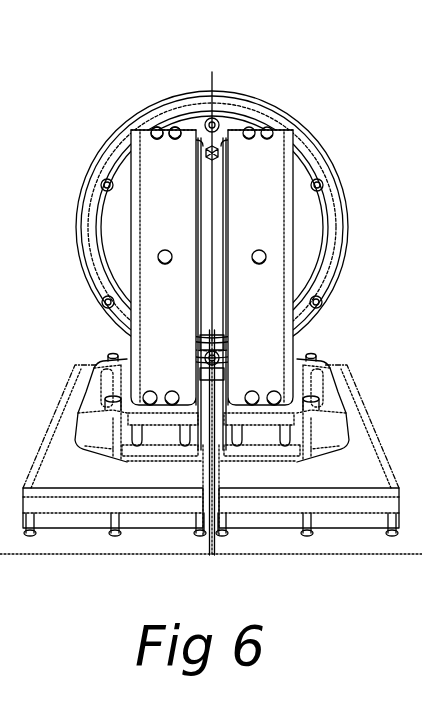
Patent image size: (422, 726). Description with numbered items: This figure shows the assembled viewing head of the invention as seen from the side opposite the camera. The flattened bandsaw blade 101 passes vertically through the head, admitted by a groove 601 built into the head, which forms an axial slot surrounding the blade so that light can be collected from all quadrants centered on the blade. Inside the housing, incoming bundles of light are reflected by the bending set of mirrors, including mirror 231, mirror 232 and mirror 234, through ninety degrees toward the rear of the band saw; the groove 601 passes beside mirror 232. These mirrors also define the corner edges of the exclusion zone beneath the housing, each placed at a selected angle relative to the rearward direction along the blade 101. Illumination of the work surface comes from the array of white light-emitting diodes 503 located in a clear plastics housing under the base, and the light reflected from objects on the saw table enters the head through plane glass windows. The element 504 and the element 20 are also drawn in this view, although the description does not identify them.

The bandsaw blade 101 is at (207, 83).
The bending mirror 231 is at (176, 163).
The bending mirror 232 is at (162, 320).
The bending mirror 234 is at (262, 157).
The mounting block 504 is at (362, 437).
The groove 601 is at (200, 490).
The array of white light-emitting diodes 503 is at (337, 522).
The wheel 20 is at (413, 218).